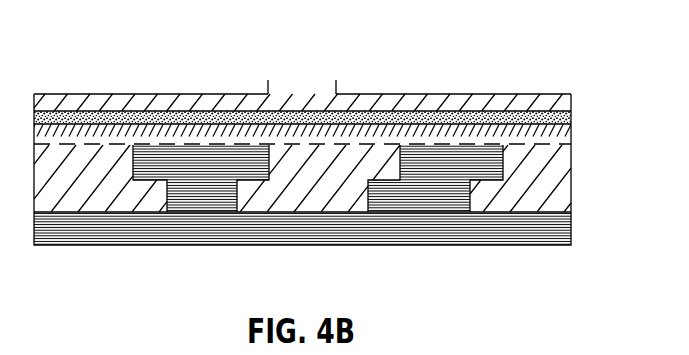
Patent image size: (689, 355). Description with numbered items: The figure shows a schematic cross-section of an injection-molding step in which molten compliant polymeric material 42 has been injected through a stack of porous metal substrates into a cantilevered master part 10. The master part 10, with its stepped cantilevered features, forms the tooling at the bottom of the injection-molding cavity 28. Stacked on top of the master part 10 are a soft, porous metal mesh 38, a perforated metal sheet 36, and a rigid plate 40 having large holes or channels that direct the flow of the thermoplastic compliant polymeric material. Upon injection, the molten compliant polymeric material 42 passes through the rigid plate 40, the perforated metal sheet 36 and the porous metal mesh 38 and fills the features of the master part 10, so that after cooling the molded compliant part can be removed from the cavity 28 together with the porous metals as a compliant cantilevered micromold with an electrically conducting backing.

The cantilevered master part 10 is at (479, 111).
The injection-molding cavity 28 is at (317, 88).
The perforated metal sheet 36 is at (537, 122).
The porous metal mesh 38 is at (415, 128).
The rigid plate 40 is at (571, 112).
The molten compliant polymeric material 42 is at (567, 180).